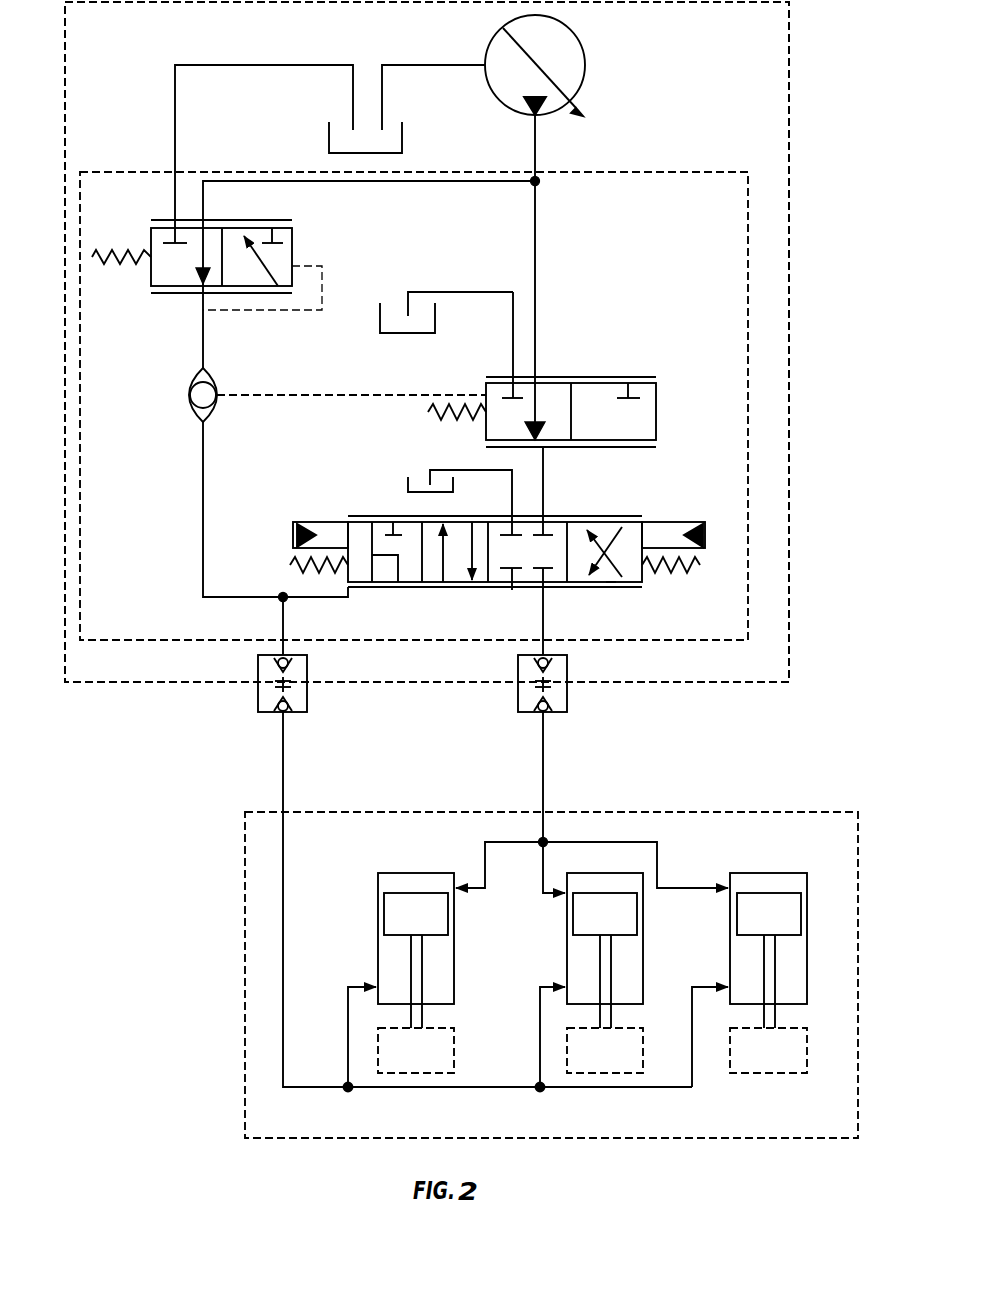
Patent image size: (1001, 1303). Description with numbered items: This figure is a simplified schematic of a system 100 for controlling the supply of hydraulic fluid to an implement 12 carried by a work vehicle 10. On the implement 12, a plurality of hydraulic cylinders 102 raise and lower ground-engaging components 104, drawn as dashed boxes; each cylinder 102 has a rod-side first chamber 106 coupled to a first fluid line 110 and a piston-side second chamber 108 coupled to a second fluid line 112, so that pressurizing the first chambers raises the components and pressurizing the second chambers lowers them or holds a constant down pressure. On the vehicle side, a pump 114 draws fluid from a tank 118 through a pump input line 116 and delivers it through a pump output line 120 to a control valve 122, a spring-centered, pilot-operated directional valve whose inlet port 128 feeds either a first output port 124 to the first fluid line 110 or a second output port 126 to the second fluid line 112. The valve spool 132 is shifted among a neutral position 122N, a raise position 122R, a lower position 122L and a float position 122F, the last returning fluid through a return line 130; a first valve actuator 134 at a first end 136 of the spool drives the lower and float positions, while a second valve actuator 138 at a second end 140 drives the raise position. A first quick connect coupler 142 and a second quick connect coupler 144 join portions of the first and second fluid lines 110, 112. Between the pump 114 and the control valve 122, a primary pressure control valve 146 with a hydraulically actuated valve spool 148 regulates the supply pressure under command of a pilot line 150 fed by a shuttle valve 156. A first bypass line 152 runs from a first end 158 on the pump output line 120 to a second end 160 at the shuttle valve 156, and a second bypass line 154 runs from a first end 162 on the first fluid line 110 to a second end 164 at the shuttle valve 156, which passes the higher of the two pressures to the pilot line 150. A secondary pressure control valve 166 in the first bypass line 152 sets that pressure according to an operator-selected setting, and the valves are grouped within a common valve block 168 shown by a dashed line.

The work vehicle 10 is at (62, 464).
The implement 12 is at (243, 884).
The system 100 is at (131, 694).
The hydraulic cylinders 102 is at (376, 910).
The ground-engaging components 104 is at (440, 1030).
The first chamber 106 is at (393, 957).
The second chamber 108 is at (425, 880).
The first fluid line 110 is at (345, 597).
The second fluid line 112 is at (545, 627).
The pump 114 is at (578, 43).
The pump input line 116 is at (440, 49).
The tank 118 is at (421, 118).
The pump output line 120 is at (537, 142).
The control valve 122 is at (526, 506).
The float position 122F is at (382, 530).
The lower position 122L is at (455, 524).
The neutral position 122N is at (553, 524).
The raise position 122R is at (605, 532).
The first output port 124 is at (512, 588).
The second output port 126 is at (545, 586).
The inlet port 128 is at (542, 520).
The return line 130 is at (460, 468).
The valve spool 132 is at (610, 585).
The first valve actuator 134 is at (318, 522).
The first end 136 is at (348, 578).
The second valve actuator 138 is at (688, 520).
The second end 140 is at (642, 578).
The first quick connect coupler 142 is at (307, 698).
The second quick connect coupler 144 is at (567, 698).
The pressure control valve 146 is at (531, 369).
The valve spool 148 is at (592, 382).
The pilot line 150 is at (328, 393).
The first bypass line 152 is at (424, 183).
The second bypass line 154 is at (200, 526).
The shuttle valve 156 is at (188, 395).
The first end 158 is at (540, 182).
The second end 160 is at (200, 368).
The first end 162 is at (282, 599).
The second end 164 is at (205, 423).
The secondary pressure control valve 166 is at (278, 214).
The valve block 168 is at (660, 172).